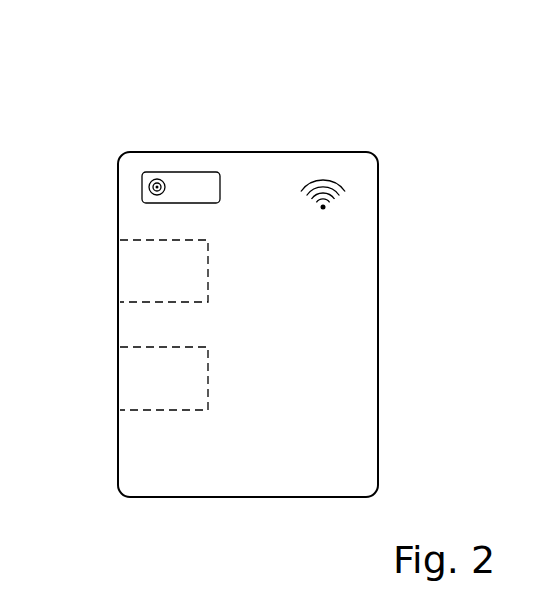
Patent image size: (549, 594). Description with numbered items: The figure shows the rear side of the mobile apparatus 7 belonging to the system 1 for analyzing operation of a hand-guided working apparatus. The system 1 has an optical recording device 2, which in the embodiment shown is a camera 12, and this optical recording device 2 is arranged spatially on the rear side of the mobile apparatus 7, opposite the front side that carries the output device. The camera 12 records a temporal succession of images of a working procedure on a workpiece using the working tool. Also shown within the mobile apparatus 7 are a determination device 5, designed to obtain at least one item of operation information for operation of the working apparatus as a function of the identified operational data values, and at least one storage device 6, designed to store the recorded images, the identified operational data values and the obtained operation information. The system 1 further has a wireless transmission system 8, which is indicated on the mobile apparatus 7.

The system 1 is at (95, 124).
The optical recording device 2 is at (159, 178).
The camera 12 is at (165, 184).
The mobile apparatus 7 is at (307, 152).
The wireless transmission system 8 is at (335, 177).
The determination device 5 is at (148, 277).
The storage device 6 is at (148, 385).